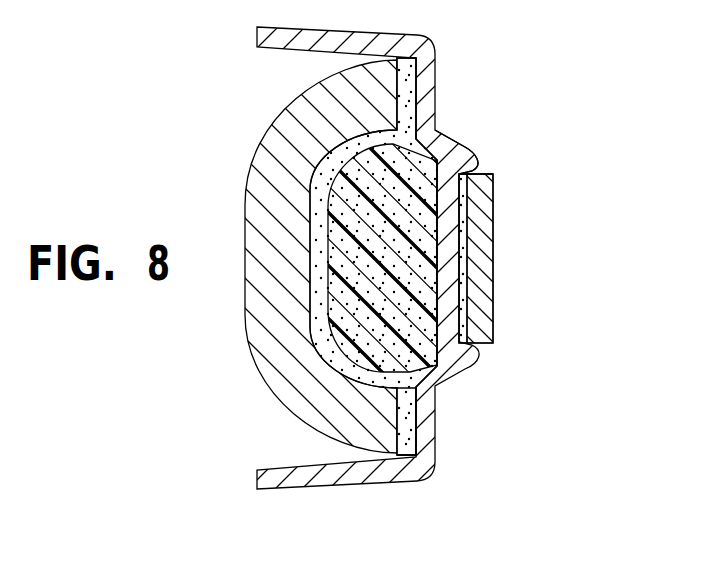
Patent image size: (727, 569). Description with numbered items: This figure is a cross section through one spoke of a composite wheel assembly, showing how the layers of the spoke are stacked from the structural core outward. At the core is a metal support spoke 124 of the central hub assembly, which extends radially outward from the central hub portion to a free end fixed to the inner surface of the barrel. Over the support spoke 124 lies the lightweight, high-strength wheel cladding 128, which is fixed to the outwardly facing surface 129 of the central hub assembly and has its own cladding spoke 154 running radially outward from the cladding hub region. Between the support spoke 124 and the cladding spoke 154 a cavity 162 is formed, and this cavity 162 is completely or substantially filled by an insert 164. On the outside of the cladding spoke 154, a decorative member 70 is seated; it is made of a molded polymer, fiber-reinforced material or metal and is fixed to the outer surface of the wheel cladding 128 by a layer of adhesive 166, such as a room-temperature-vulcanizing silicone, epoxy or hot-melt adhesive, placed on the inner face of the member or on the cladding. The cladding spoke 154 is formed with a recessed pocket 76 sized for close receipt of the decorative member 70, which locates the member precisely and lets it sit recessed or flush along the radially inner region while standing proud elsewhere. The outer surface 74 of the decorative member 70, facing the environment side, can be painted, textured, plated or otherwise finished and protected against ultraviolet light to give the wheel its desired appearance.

The decorative member 70 is at (525, 253).
The outer surface of the decorative member 74 is at (493, 287).
The recessed pocket 76 is at (468, 173).
The support spoke 124 is at (284, 123).
The wheel cladding 128 is at (446, 129).
The outwardly facing surface of the central hub assembly 129 is at (403, 421).
The cladding spoke 154 is at (435, 92).
The cavity 162 is at (415, 343).
The insert 164 is at (360, 293).
The adhesive 166 is at (467, 323).